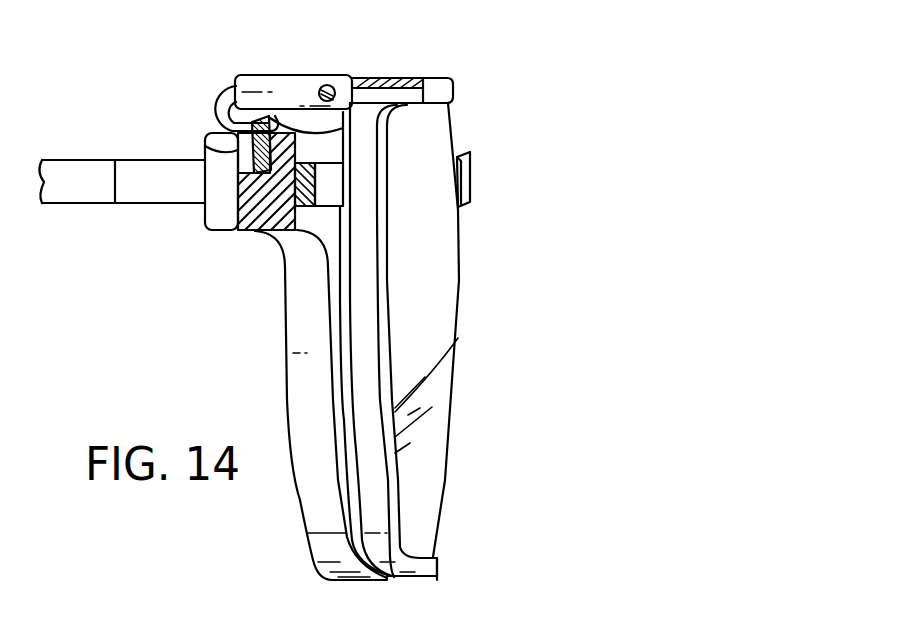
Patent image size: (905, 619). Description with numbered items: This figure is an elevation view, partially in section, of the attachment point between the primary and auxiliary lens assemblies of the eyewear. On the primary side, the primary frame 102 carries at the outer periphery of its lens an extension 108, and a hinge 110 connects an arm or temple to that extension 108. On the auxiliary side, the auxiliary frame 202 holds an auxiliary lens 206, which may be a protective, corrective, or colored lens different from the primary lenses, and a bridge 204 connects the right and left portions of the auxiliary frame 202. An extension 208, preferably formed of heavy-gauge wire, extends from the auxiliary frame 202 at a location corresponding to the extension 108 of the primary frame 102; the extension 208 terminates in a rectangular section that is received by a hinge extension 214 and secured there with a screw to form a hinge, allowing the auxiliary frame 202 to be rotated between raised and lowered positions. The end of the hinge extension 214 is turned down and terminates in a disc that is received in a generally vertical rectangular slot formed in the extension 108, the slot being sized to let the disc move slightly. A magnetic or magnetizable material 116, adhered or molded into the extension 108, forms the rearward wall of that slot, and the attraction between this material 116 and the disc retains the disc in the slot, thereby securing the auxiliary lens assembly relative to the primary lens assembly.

The primary frame 102 is at (322, 550).
The extension 108 is at (222, 218).
The hinge 110 is at (115, 203).
The magnetic or magnetizable material 116 is at (205, 146).
The auxiliary frame 202 is at (437, 77).
The bridge 204 is at (473, 178).
The auxiliary lens 206 is at (435, 315).
The extension 208 is at (372, 92).
The hinge extension 214 is at (212, 97).